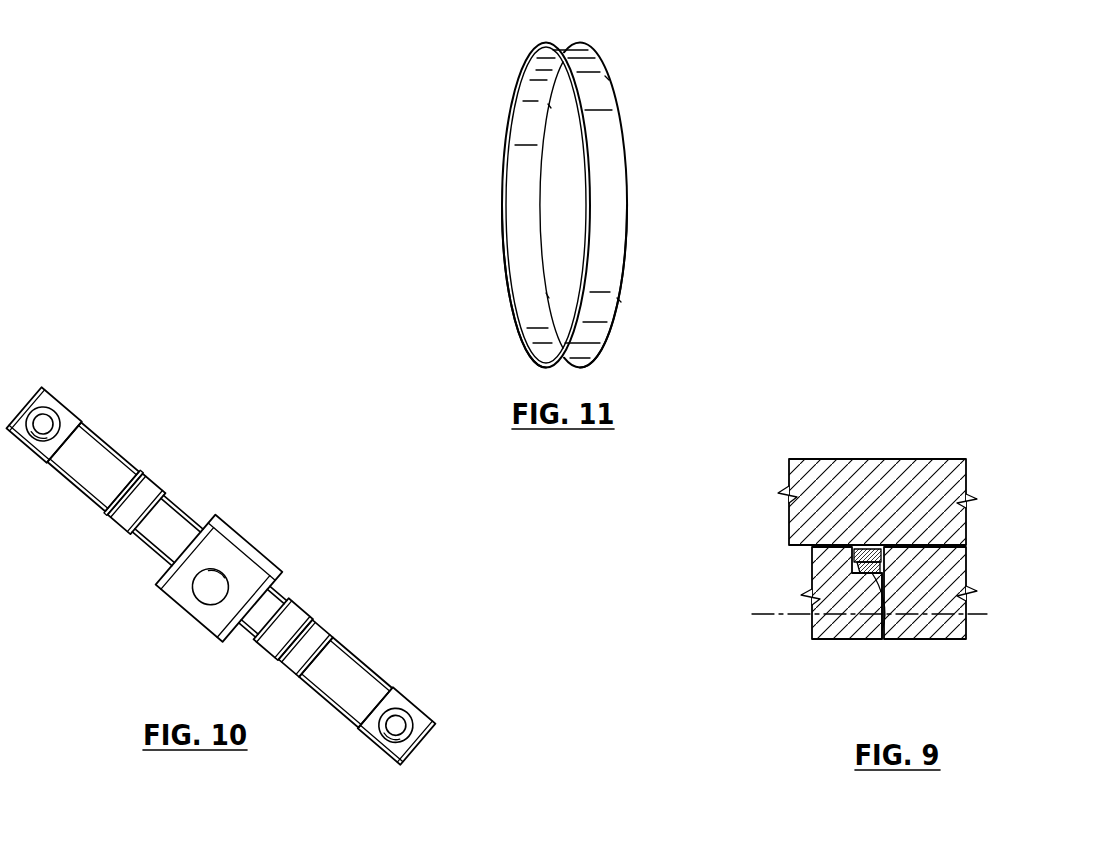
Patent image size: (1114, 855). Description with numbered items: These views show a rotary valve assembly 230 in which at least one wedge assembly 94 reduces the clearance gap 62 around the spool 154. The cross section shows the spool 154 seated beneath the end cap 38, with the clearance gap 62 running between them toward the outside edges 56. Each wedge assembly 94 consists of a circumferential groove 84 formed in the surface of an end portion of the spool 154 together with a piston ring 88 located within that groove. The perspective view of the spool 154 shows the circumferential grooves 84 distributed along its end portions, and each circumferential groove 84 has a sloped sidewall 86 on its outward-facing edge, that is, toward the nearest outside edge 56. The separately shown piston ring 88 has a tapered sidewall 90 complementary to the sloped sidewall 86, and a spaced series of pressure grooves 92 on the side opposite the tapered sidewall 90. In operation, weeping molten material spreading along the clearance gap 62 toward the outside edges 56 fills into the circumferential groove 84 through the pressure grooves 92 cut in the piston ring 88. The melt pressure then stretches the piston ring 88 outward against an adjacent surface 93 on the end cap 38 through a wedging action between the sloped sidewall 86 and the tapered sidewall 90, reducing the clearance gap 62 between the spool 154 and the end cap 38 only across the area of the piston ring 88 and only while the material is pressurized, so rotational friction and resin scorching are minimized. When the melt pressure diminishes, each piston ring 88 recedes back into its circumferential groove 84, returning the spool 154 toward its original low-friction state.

In FIG. 9, the end cap 38 is at (948, 530).
In FIG. 9, the outside edges 56 is at (812, 548).
In FIG. 9, the clearance gap 62 is at (907, 545).
In FIG. 9, the circumferential groove 84 is at (882, 633).
In FIG. 9, the sloped sidewall 86 is at (853, 545).
In FIG. 11, the piston ring 88 is at (520, 190).
In FIG. 9, the piston ring 88 is at (872, 574).
In FIG. 11, the tapered sidewall 90 is at (508, 312).
In FIG. 11, the pressure grooves 92 is at (620, 300).
In FIG. 9, the adjacent surface 93 is at (876, 545).
In FIG. 10, the wedge assembly 94 is at (143, 556).
In FIG. 10, the spool 154 is at (420, 643).
In FIG. 9, the spool 154 is at (943, 600).
In FIG. 9, the rotary valve assembly 230 is at (1036, 274).